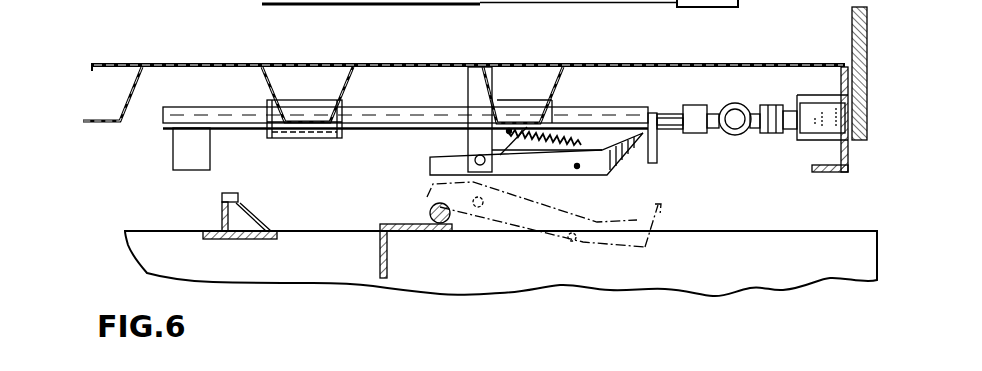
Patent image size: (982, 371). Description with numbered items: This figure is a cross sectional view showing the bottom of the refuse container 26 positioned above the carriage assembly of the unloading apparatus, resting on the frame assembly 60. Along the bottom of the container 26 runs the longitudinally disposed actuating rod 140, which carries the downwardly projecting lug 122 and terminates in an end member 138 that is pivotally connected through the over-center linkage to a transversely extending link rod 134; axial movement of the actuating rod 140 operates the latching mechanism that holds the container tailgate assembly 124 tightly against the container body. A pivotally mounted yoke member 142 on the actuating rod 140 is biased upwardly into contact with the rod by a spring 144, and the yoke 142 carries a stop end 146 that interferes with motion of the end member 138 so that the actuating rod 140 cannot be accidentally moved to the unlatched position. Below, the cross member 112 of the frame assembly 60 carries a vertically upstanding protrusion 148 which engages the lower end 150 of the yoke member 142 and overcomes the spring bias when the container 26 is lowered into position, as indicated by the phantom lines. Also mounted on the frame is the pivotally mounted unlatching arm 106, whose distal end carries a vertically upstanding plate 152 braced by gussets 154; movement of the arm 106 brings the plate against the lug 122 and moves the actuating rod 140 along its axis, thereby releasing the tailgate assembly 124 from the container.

The refuse container 26 is at (427, 63).
The frame assembly 60 is at (625, 282).
The unlatching arm 106 is at (233, 242).
The cross member 112 is at (408, 236).
The downwardly projecting lug 122 is at (210, 161).
The container tailgate assembly 124 is at (870, 124).
The link rod 134 is at (732, 136).
The end member 138 is at (695, 134).
The actuating rod 140 is at (391, 113).
The yoke member 142 is at (608, 173).
The spring 144 is at (560, 168).
The stop end 146 is at (657, 153).
The vertically upstanding protrusion 148 is at (429, 212).
The lower end 150 is at (428, 171).
The vertically upstanding plate 152 is at (222, 195).
The bracing gussets 154 is at (252, 212).